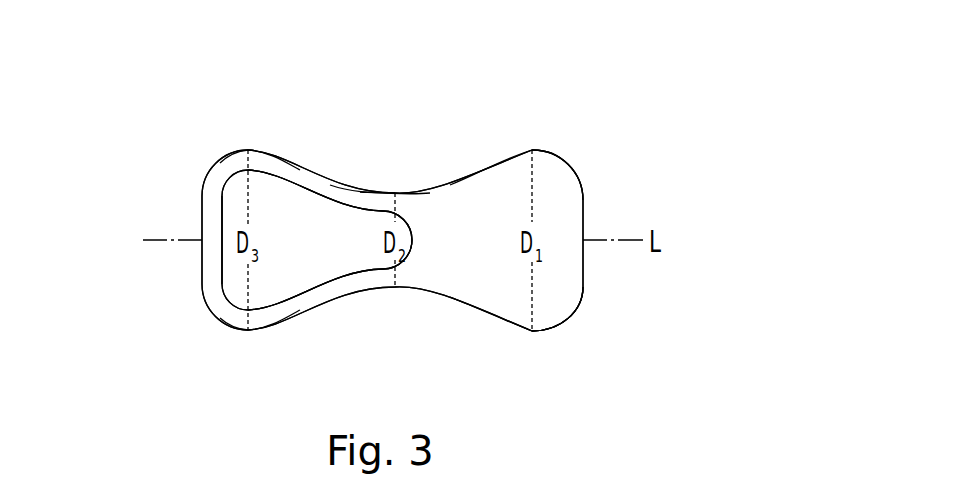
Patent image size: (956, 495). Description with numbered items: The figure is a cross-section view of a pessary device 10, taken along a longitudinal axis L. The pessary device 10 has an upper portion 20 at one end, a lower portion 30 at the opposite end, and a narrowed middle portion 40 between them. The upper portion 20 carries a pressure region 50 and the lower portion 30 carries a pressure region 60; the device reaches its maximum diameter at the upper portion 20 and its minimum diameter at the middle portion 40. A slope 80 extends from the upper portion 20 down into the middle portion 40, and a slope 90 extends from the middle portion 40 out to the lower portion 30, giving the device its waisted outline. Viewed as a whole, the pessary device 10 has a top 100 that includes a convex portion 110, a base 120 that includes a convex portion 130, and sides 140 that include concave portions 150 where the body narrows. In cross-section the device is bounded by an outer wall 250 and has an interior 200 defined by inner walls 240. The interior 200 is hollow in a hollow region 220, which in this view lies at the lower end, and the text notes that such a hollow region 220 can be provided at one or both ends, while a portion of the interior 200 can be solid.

The pessary device 10 is at (606, 60).
The upper portion 20 is at (564, 158).
The lower portion 30 is at (228, 155).
The middle portion 40 is at (391, 193).
The pressure region 50 is at (541, 151).
The pressure region 60 is at (248, 149).
The slope 80 is at (488, 166).
The slope 90 is at (302, 171).
The top 100 is at (573, 312).
The convex portion 110 is at (532, 332).
The base 120 is at (218, 318).
The convex portion 130 is at (249, 331).
The sides 140 is at (443, 185).
The concave portions 150 is at (364, 192).
The interior 200 is at (273, 265).
The hollow region 220 is at (315, 261).
The inner walls 240 is at (221, 207).
The outer wall 250 is at (200, 222).